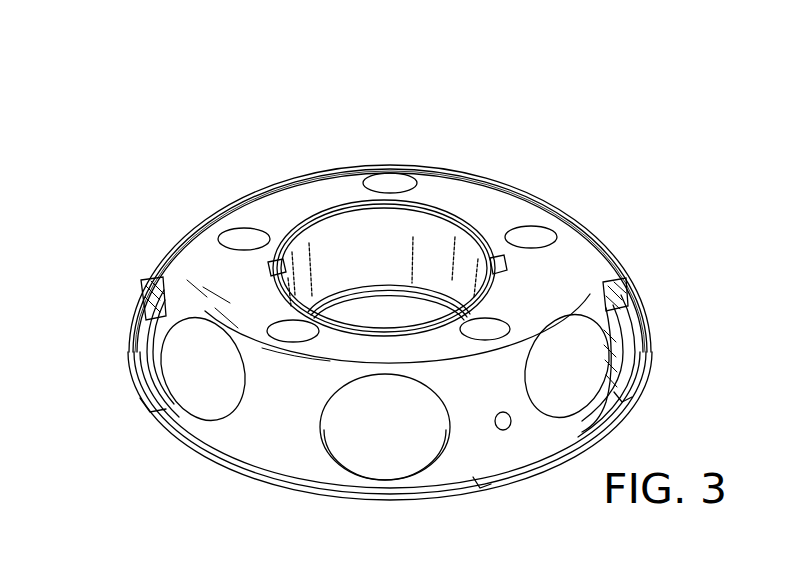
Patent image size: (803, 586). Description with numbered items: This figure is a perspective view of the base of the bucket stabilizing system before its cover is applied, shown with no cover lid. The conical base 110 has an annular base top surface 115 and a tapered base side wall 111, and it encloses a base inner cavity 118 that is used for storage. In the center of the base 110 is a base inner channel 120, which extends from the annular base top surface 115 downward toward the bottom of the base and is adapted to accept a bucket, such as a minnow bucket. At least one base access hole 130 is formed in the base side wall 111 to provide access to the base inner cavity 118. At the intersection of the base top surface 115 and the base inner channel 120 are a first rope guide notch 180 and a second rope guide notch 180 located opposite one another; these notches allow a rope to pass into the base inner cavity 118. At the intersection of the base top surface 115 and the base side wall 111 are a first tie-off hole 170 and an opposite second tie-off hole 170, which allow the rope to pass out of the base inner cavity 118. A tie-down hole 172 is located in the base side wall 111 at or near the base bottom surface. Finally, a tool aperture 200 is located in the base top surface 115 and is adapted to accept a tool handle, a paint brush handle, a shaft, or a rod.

The conical base 110 is at (278, 164).
The tapered base side wall 111 is at (282, 417).
The annular base top surface 115 is at (243, 227).
The base inner cavity 118 is at (197, 358).
The base inner channel 120 is at (380, 287).
The base access hole 130 is at (192, 318).
The tie-off hole 170 is at (155, 312).
The tie-down hole 172 is at (506, 430).
The rope guide notch 180 is at (497, 267).
The tool aperture 200 is at (403, 175).